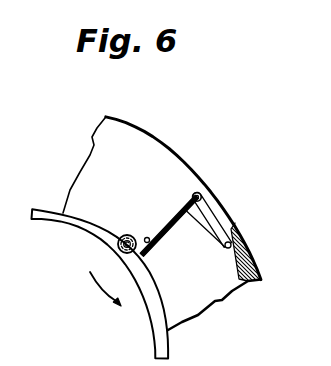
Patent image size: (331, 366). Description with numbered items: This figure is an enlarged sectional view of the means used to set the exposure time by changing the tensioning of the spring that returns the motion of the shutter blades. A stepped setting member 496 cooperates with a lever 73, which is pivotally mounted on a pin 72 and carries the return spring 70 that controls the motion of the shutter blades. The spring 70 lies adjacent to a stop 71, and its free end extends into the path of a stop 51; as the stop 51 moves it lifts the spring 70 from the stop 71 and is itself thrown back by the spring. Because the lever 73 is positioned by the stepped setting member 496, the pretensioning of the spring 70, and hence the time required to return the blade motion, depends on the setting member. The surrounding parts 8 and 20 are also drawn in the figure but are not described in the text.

The ring 8 is at (153, 336).
The segment 20 is at (161, 143).
The roller 51 is at (118, 246).
The lever 70 is at (168, 232).
The pin 71 is at (148, 237).
The pivot 72 is at (192, 194).
The link 73 is at (212, 215).
The toothed portion 496 is at (243, 282).